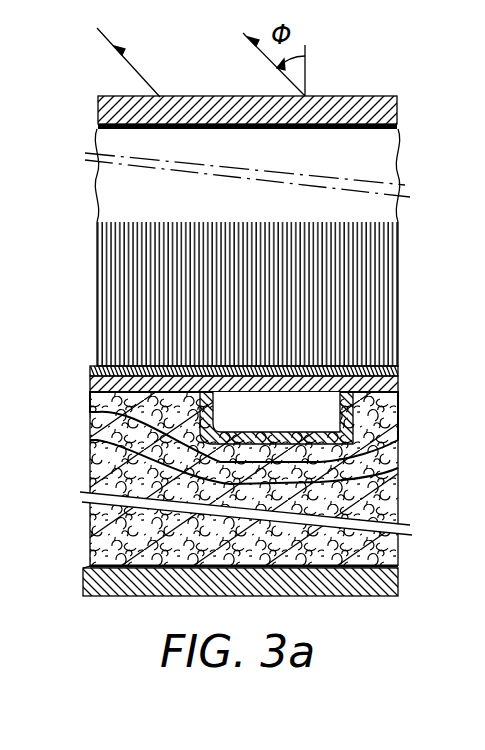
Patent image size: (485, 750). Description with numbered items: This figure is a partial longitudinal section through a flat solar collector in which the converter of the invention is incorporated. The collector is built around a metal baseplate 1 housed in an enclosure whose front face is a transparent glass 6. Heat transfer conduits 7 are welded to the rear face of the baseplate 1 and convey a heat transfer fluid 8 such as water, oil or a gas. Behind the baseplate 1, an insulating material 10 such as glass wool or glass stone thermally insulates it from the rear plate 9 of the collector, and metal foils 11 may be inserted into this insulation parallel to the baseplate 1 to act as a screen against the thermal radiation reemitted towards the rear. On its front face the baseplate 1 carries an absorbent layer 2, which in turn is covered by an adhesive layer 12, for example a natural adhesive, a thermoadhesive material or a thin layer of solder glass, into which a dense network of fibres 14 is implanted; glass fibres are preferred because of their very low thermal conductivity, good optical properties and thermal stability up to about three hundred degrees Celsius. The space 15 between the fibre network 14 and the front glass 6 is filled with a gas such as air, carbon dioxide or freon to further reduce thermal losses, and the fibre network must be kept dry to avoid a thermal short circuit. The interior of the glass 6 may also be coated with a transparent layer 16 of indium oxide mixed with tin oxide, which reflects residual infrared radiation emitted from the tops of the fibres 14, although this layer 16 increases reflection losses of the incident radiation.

The transparent glass 6 is at (100, 108).
The transparent layer 16 is at (100, 129).
The space 15 is at (105, 190).
The fibres 14 is at (105, 300).
The adhesive layer 12 is at (399, 372).
The absorbent layer 2 is at (399, 383).
The metal baseplate 1 is at (399, 393).
The metal foils 11 is at (105, 430).
The insulating material 10 is at (105, 470).
The rear plate 9 is at (85, 583).
The heat transfer fluid 8 is at (250, 424).
The heat transfer conduits 7 is at (340, 418).